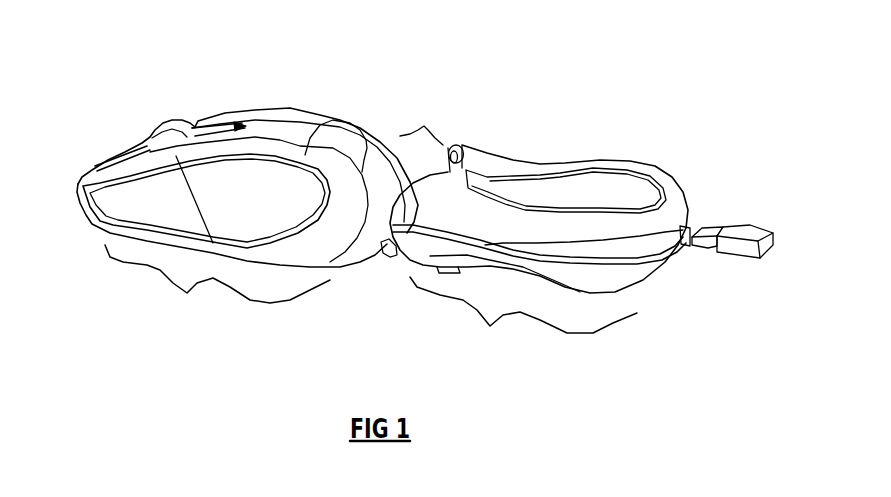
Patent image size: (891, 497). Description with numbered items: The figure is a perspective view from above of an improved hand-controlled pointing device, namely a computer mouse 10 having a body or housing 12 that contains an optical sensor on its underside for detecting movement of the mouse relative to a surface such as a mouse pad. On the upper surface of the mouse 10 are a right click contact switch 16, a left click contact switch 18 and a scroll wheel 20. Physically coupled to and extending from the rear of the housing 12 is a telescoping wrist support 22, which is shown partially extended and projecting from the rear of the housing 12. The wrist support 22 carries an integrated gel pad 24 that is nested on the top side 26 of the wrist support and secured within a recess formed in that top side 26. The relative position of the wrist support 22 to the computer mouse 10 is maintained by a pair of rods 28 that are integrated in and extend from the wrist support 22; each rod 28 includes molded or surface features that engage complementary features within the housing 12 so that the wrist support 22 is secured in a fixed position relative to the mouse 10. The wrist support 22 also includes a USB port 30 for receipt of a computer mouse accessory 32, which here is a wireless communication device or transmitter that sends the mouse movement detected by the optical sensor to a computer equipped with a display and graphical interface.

The computer mouse 10 is at (190, 300).
The housing 12 is at (365, 168).
The right click contact switch 16 is at (225, 117).
The left click contact switch 18 is at (142, 157).
The scroll wheel 20 is at (157, 133).
The wrist support 22 is at (493, 328).
The gel pad 24 is at (597, 183).
The top side 26 is at (472, 214).
The rod 28 is at (388, 252).
The USB port 30 is at (678, 255).
The computer mouse accessory 32 is at (767, 230).